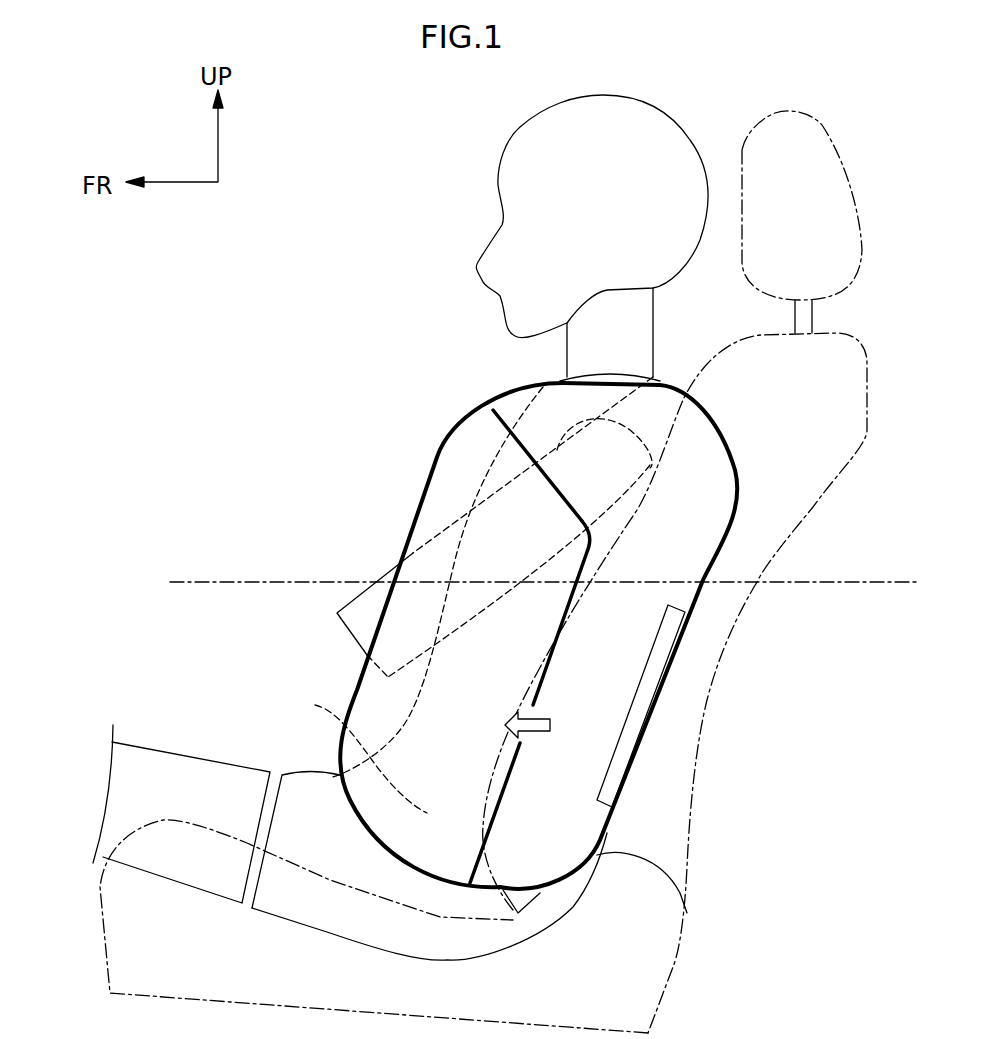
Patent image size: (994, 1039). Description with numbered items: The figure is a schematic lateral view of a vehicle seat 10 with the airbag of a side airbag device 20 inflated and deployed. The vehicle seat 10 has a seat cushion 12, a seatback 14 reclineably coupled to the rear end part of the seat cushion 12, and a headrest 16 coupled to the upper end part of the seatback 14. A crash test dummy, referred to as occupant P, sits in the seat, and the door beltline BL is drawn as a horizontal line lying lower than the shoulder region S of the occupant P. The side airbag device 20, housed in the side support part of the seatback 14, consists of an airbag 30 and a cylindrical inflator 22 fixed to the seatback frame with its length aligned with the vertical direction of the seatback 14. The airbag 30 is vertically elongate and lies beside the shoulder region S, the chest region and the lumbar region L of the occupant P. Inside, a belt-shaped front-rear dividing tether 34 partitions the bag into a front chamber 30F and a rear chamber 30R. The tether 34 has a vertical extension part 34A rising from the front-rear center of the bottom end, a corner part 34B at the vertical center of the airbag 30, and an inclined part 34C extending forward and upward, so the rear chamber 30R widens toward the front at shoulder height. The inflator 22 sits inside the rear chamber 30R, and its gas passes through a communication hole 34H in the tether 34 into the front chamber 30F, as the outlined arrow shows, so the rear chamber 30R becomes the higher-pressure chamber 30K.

The vehicle seat 10 is at (96, 965).
The seat cushion 12 is at (100, 915).
The seatback 14 is at (868, 370).
The headrest 16 is at (830, 150).
The side airbag device 20 is at (351, 490).
The inflator 22 is at (640, 713).
The airbag 30 is at (538, 636).
The front chamber 30F is at (497, 688).
The rear chamber 30R is at (618, 636).
The chamber having higher pressure 30K is at (648, 653).
The front-rear dividing tether 34 is at (553, 646).
The vertical extension part 34A is at (511, 767).
The corner part 34B is at (593, 543).
The inclined part 34C is at (545, 478).
The communication hole 34H is at (613, 732).
The crash test dummy / occupant P is at (497, 139).
The shoulder region S is at (617, 423).
The lumbar region L is at (359, 753).
The door beltline BL is at (175, 577).